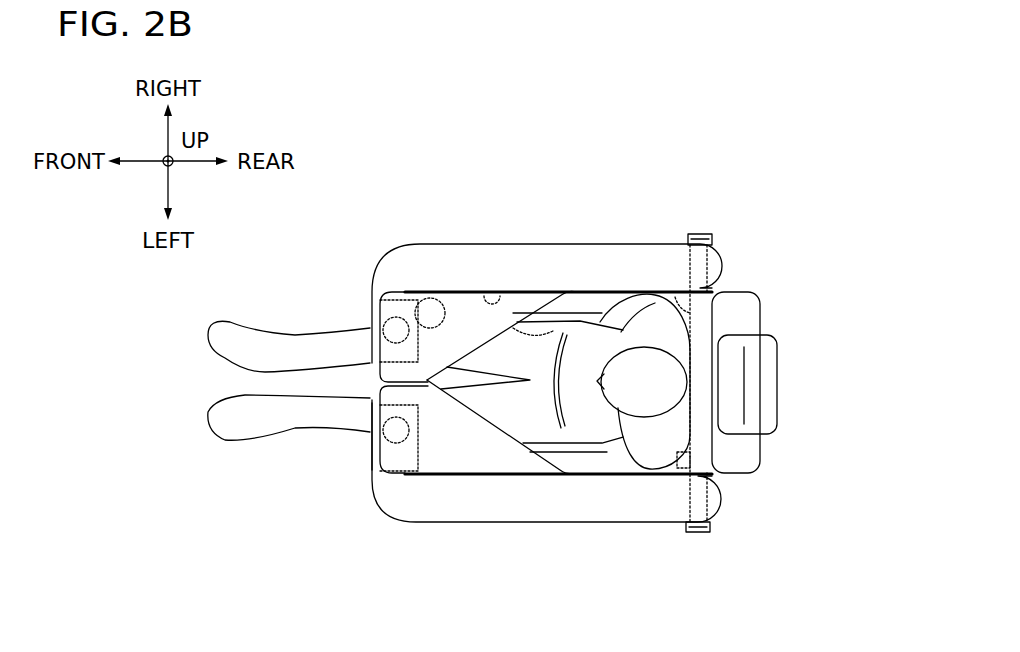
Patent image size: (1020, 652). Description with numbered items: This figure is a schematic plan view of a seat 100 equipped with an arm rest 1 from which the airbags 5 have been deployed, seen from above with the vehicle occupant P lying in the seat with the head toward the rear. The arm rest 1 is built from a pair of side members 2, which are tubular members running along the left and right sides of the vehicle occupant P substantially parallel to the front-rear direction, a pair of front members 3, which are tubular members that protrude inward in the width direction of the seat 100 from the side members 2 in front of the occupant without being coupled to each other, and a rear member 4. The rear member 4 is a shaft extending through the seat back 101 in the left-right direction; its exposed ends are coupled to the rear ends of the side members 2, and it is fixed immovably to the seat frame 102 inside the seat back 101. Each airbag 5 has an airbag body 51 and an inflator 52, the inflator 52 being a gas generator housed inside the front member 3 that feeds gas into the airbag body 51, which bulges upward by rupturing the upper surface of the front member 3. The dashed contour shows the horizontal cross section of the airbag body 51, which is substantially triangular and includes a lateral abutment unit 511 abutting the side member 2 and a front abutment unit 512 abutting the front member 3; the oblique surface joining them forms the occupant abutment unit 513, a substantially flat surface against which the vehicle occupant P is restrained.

The arm rest 1 is at (387, 236).
The side members 2 is at (641, 242).
The front members 3 is at (370, 452).
The rear member 4 is at (727, 258).
The airbags 5 is at (322, 226).
The airbag body 51 is at (405, 287).
The inflator 52 is at (369, 308).
The lateral abutment unit 511 is at (493, 292).
The front abutment unit 512 is at (436, 292).
The occupant abutment unit 513 is at (568, 290).
The seat 100 is at (806, 384).
The seat back 101 is at (746, 317).
The seat frame 102 is at (683, 472).
The vehicle occupant P is at (586, 426).